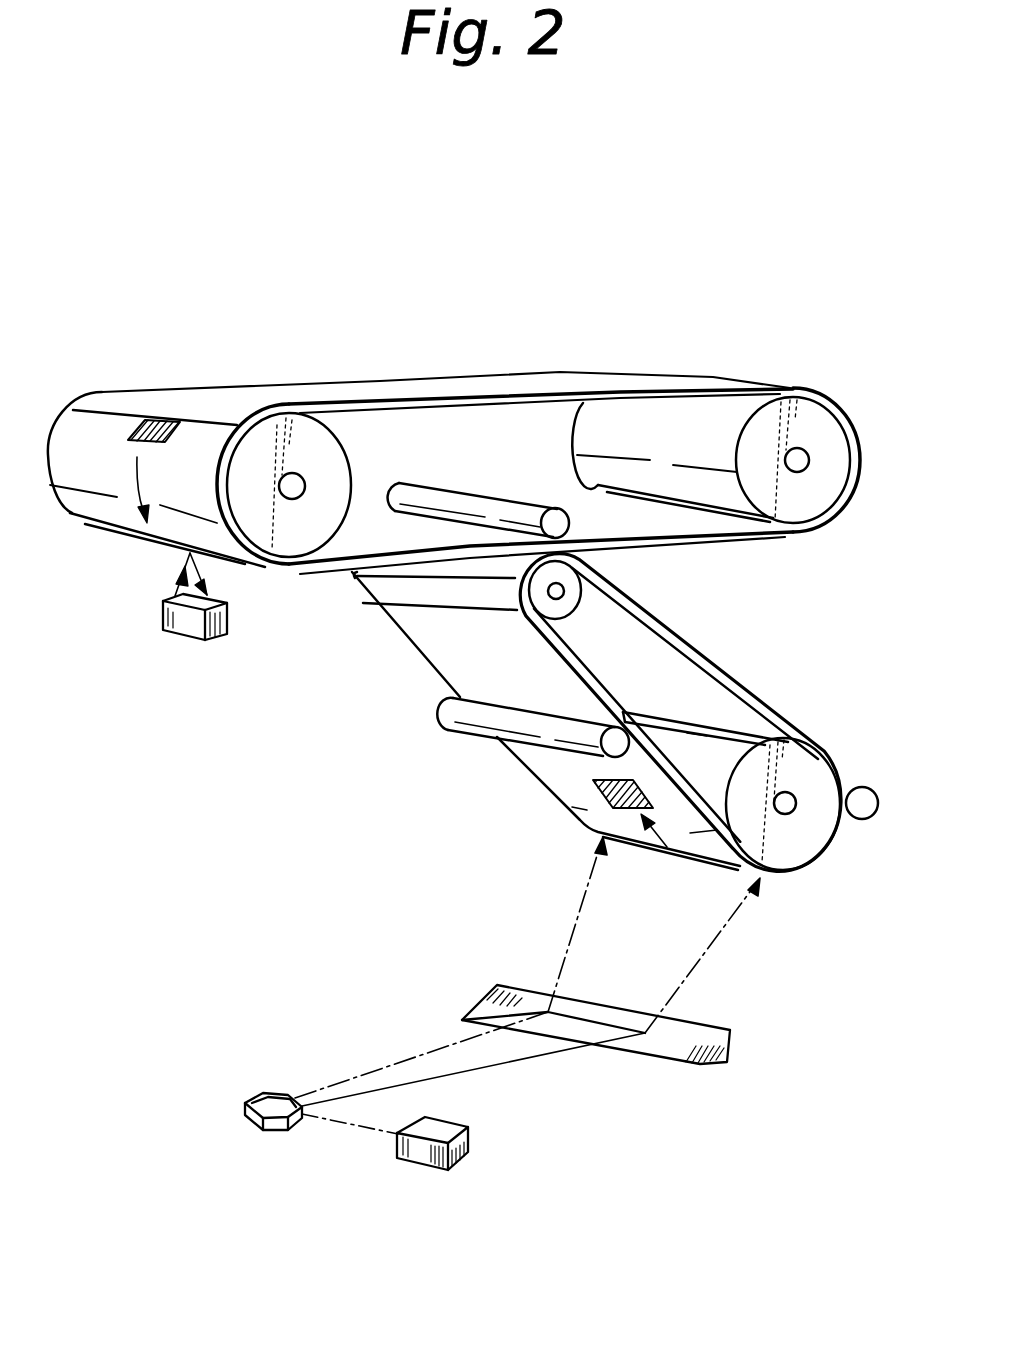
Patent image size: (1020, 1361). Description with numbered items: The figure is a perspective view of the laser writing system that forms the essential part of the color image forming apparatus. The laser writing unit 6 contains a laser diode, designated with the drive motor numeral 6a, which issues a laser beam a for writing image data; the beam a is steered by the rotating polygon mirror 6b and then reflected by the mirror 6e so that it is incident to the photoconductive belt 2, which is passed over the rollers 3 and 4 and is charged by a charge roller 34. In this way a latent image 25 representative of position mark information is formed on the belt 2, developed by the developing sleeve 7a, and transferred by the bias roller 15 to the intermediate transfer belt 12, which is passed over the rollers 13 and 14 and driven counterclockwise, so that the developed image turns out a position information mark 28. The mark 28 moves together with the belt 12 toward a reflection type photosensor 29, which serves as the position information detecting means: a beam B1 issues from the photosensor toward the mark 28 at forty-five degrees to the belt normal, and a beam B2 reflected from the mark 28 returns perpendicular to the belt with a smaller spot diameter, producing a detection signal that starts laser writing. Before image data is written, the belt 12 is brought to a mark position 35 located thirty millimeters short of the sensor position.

The intermediate transfer belt 12 is at (448, 380).
The roller 13 is at (280, 433).
The roller 14 is at (810, 415).
The mark position 35 is at (112, 412).
The position information mark 28 is at (157, 420).
The reflection type photosensor 29 is at (188, 625).
The beam B1 is at (178, 562).
The reflected beam B2 is at (208, 578).
The bias roller 15 is at (450, 503).
The developing sleeve 7a is at (485, 717).
The latent image 25 is at (600, 788).
The roller 3 is at (572, 597).
The photoconductive belt 2 is at (738, 668).
The roller 4 is at (803, 772).
The charge roller 34 is at (870, 810).
The laser writing unit 6 is at (501, 1057).
The drive motor 6a is at (472, 1147).
The polygon mirror 6b is at (270, 1093).
The mirror 6e is at (673, 1062).
The laser beam a is at (337, 1127).